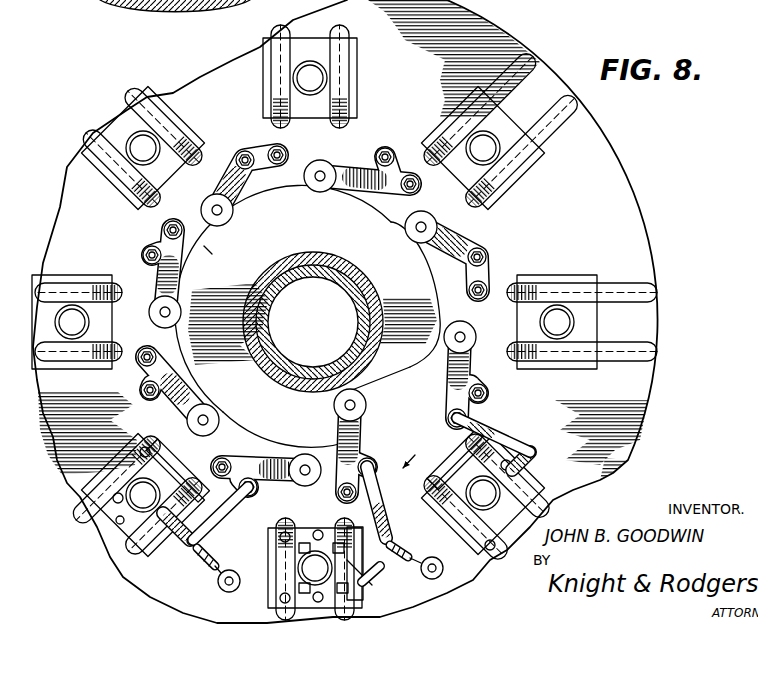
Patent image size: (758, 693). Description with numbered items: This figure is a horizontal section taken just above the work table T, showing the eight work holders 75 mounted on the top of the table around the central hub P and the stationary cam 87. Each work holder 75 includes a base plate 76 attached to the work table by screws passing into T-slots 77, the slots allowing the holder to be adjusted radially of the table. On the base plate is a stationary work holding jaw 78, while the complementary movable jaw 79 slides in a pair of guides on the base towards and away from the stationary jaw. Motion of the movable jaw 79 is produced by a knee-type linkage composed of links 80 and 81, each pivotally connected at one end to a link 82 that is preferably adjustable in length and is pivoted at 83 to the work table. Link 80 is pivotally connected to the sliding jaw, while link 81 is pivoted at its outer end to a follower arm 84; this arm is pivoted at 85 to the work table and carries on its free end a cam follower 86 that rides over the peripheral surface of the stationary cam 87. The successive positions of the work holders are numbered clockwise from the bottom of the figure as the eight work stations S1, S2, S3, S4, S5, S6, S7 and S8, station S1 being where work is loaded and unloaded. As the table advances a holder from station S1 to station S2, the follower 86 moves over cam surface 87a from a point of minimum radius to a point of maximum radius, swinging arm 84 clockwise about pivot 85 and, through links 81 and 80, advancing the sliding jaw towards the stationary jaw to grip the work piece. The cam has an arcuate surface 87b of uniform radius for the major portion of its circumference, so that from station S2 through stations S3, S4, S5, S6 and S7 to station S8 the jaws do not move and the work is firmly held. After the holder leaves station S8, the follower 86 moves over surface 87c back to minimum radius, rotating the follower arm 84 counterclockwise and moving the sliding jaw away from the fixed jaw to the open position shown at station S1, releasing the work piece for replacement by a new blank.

The work table T is at (642, 211).
The central hub P is at (361, 301).
The work holder 75 is at (344, 322).
The base plate 76 is at (576, 370).
The T-slots 77 is at (347, 104).
The stationary work holding jaw 78 is at (118, 496).
The movable jaw 79 is at (570, 482).
The link 80 is at (558, 443).
The link 81 is at (226, 520).
The link 82 is at (204, 564).
The pivot 83 is at (230, 593).
The follower arm 84 is at (222, 190).
The pivot 85 is at (285, 154).
The cam follower 86 is at (304, 180).
The stationary cam 87 is at (307, 316).
The cam surface 87a is at (316, 407).
The arcuate surface 87b is at (210, 251).
The cam surface 87c is at (415, 301).
The first station S1 is at (321, 631).
The second station S2 is at (75, 555).
The third station S3 is at (23, 327).
The fourth station S4 is at (106, 103).
The fifth station S5 is at (289, 14).
The sixth station S6 is at (565, 61).
The seventh station S7 is at (679, 315).
The eighth station S8 is at (503, 567).